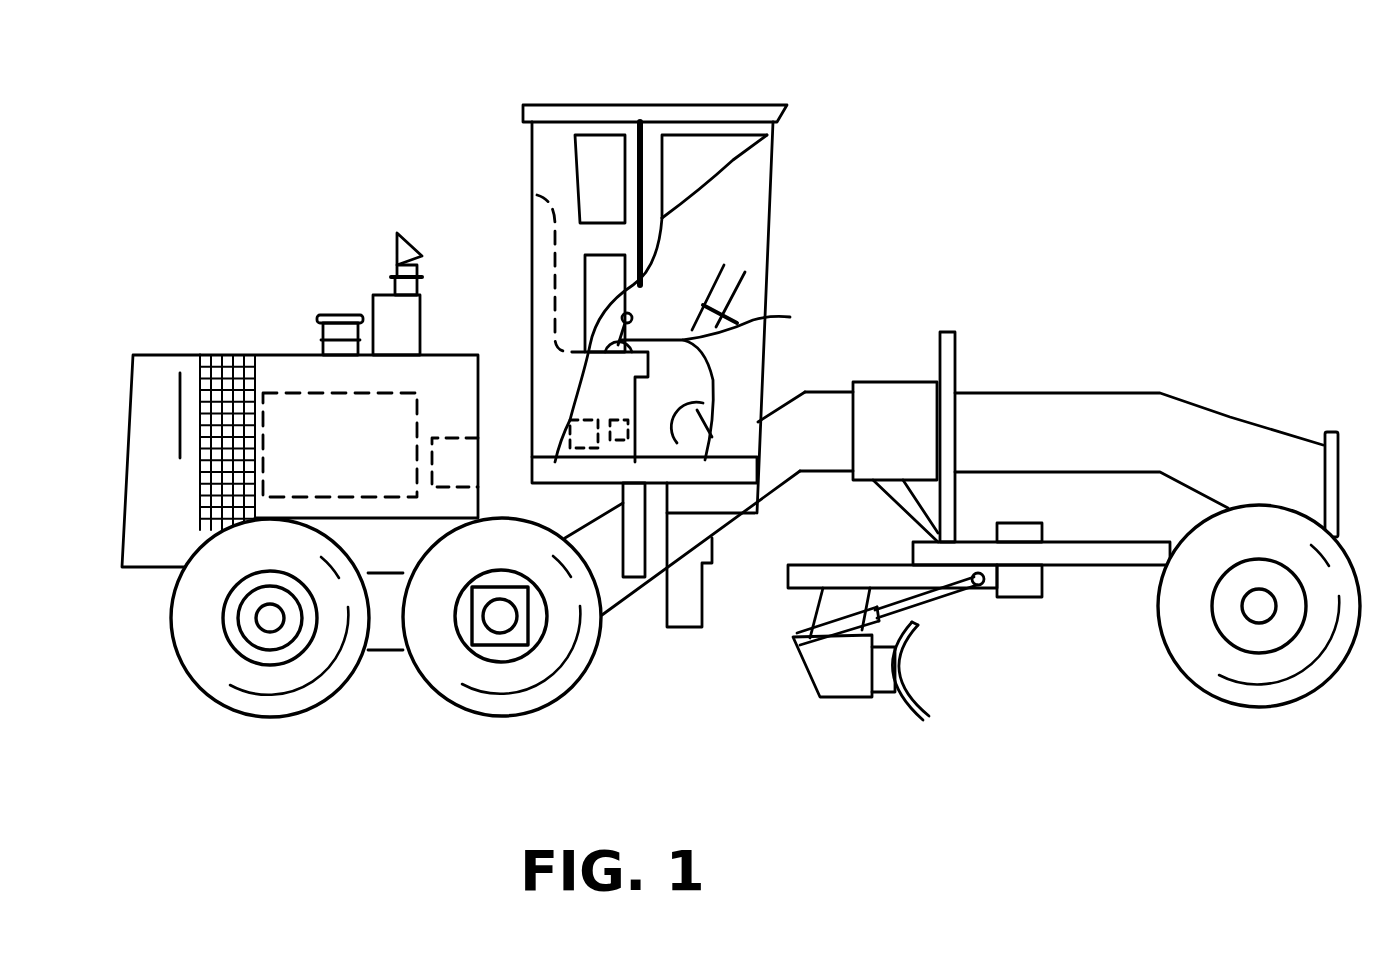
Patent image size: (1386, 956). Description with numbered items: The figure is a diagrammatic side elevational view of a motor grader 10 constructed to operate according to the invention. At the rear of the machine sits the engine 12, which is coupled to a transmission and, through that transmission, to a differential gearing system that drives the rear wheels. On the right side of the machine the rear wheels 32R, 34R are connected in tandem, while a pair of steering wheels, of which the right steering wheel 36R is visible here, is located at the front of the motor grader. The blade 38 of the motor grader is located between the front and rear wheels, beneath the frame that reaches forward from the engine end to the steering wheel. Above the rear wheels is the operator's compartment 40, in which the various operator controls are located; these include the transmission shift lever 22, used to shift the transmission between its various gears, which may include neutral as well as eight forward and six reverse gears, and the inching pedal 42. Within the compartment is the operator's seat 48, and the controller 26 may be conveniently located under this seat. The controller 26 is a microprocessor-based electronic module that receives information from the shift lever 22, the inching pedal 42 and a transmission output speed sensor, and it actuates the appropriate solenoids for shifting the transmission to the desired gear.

The motor grader 10 is at (1142, 172).
The engine 12 is at (329, 418).
The shift lever 22 is at (790, 317).
The controller 26 is at (578, 420).
The rear wheel 32R is at (552, 703).
The rear wheel 34R is at (297, 718).
The steering wheel 36R is at (1265, 708).
The blade 38 is at (903, 672).
The operator's compartment 40 is at (645, 103).
The inching pedal 42 is at (750, 392).
The operator's seat 48 is at (543, 247).